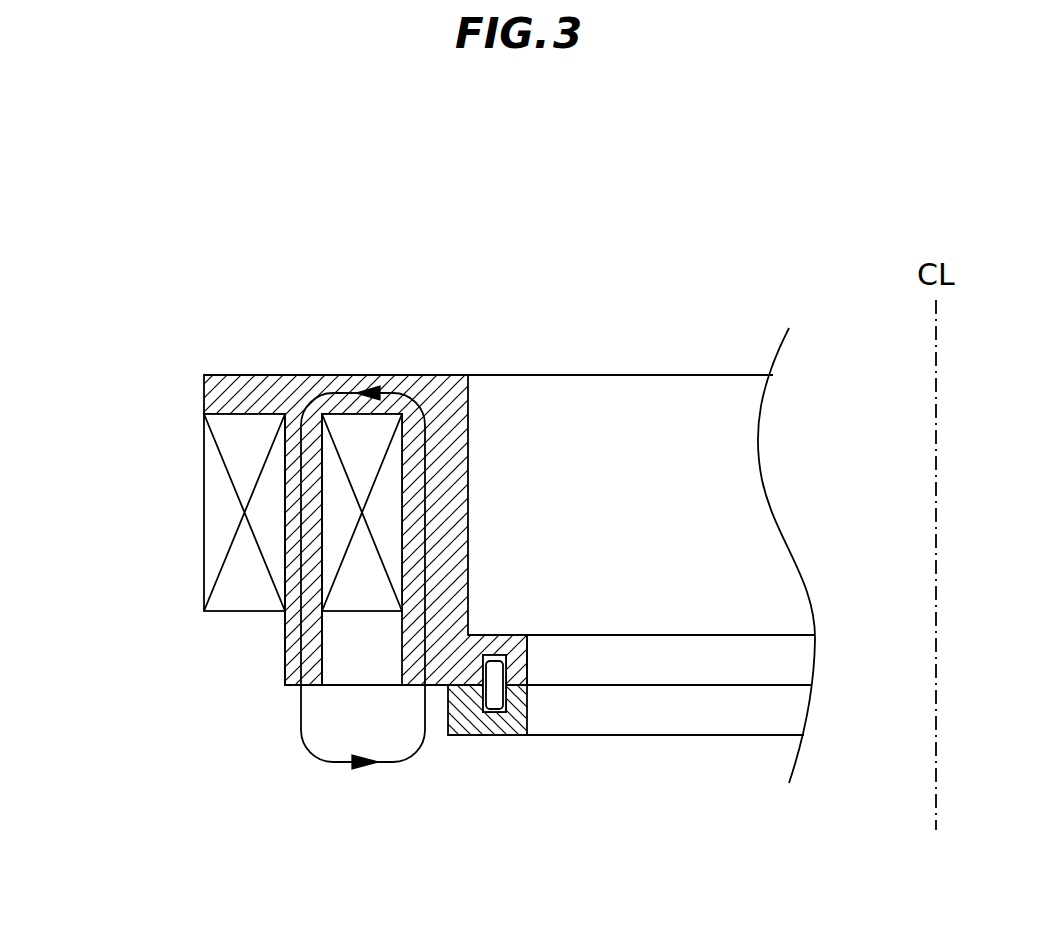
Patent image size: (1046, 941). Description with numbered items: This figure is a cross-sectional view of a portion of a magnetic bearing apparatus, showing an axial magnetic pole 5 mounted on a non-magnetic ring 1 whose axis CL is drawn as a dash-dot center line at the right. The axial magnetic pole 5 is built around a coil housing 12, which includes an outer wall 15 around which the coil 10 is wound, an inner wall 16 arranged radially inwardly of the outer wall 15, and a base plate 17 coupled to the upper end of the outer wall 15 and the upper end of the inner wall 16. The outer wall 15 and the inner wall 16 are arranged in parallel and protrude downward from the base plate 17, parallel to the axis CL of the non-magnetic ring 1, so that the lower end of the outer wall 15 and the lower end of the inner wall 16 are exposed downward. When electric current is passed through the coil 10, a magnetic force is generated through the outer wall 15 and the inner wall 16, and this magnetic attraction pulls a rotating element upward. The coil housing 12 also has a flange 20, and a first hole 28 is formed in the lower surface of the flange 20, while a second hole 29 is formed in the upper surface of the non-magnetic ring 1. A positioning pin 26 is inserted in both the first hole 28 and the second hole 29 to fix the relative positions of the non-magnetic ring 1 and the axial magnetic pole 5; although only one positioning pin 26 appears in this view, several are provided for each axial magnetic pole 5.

The non-magnetic ring 1 is at (483, 735).
The axial magnetic pole 5 is at (212, 312).
The coil 10 is at (215, 513).
The coil housing 12 is at (425, 375).
The outer wall 15 is at (285, 643).
The inner wall 16 is at (468, 468).
The base plate 17 is at (333, 393).
The flange 20 is at (486, 656).
The positioning pin 26 is at (497, 692).
The first hole 28 is at (505, 655).
The second hole 29 is at (498, 716).